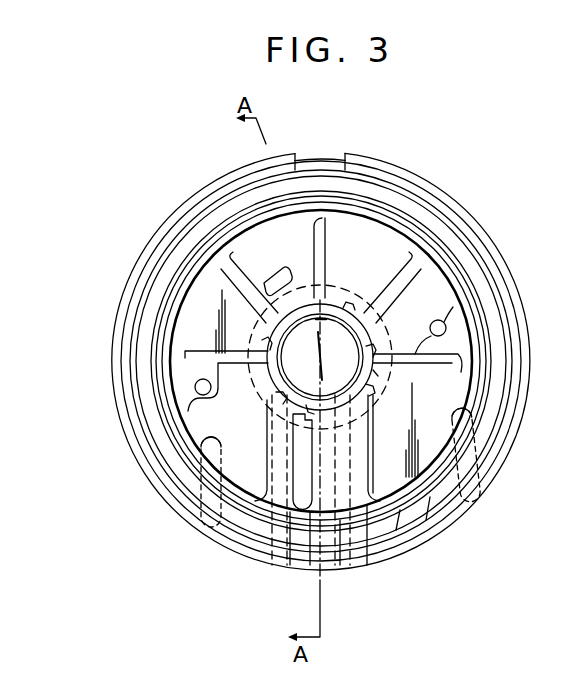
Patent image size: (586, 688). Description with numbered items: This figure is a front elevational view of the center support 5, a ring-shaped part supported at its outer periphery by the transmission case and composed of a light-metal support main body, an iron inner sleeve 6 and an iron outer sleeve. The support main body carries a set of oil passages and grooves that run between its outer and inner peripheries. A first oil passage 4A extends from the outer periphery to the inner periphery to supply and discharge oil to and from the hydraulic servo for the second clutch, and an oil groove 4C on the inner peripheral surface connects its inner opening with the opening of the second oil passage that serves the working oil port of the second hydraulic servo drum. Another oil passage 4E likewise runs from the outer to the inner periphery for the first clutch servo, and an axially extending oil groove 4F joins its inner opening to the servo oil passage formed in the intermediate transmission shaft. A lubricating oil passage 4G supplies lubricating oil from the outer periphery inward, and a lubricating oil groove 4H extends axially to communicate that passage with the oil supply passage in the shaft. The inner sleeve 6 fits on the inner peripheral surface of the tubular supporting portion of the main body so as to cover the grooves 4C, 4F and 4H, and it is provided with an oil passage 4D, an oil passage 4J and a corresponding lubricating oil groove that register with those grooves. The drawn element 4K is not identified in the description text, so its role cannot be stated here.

The center support 5 is at (396, 146).
The inner sleeve 6 is at (423, 287).
The oil groove 4F is at (268, 322).
The oil passage 4J is at (275, 350).
The lubricating oil groove 4H is at (378, 340).
The projection 4K is at (380, 374).
The oil groove 4C is at (320, 403).
The oil passage 4D is at (280, 478).
The oil passage 4E is at (252, 553).
The first oil passage 4A is at (328, 487).
The lubricating oil passage 4G is at (360, 483).